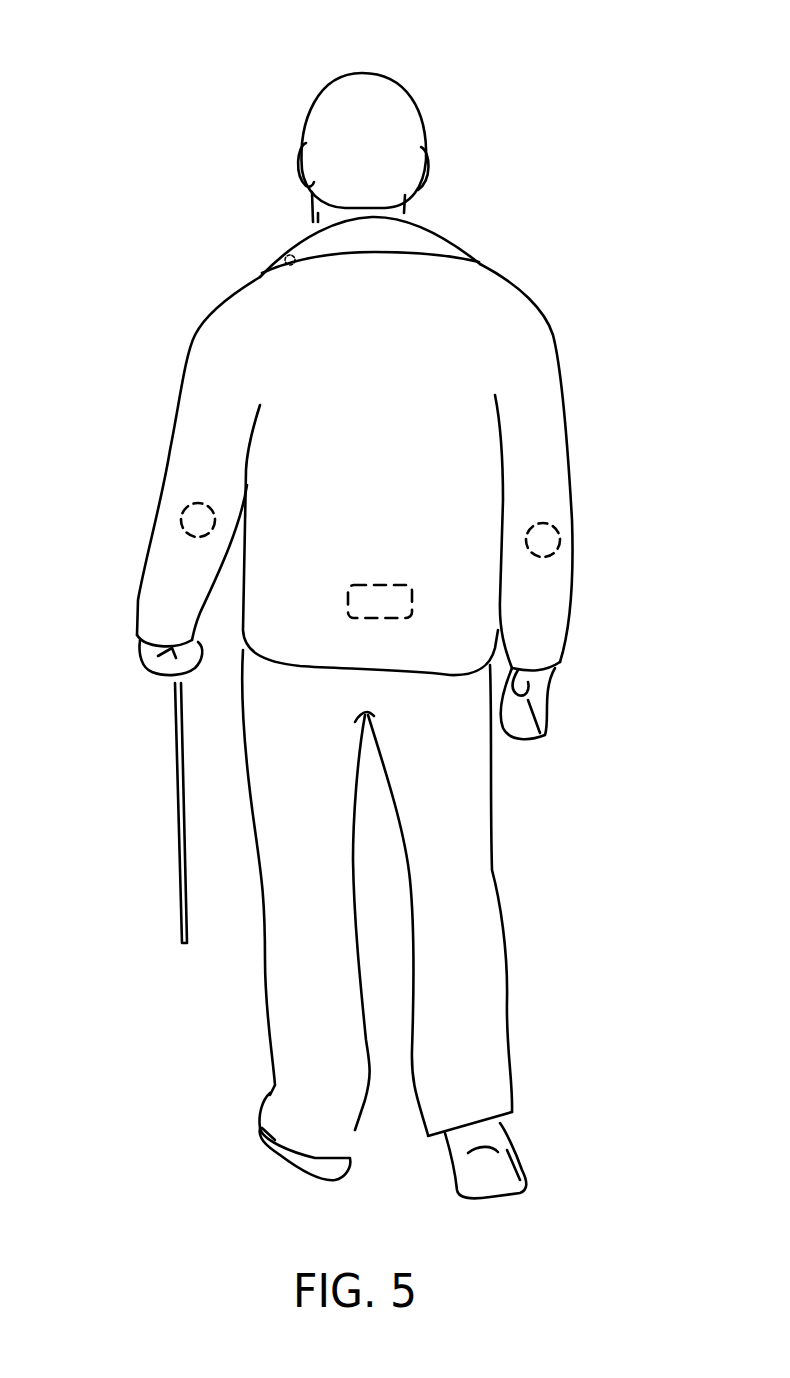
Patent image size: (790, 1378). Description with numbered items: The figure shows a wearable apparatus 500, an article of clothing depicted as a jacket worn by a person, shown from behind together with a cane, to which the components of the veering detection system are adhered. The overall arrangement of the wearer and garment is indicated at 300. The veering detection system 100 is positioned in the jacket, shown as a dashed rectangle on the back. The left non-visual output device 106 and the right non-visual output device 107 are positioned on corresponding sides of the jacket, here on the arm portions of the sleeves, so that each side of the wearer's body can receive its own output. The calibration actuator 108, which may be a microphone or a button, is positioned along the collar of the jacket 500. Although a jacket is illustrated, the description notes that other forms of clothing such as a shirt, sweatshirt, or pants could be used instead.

The user wearing the garment 300 is at (445, 105).
The wearable apparatus 500 is at (532, 300).
The calibration actuator 108 is at (285, 259).
The left non-visual output device 106 is at (181, 519).
The right non-visual output device 107 is at (561, 540).
The veering detection system 100 is at (360, 617).